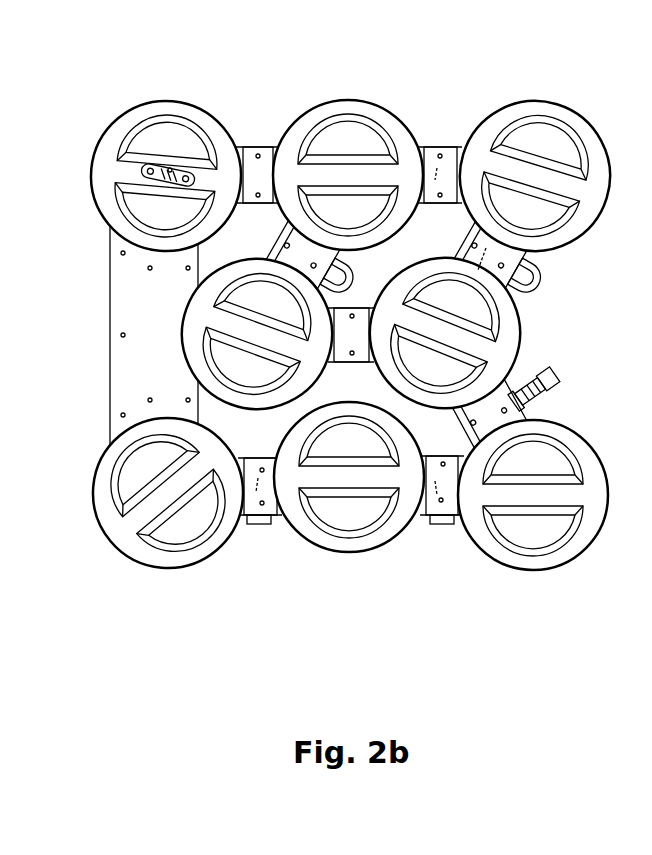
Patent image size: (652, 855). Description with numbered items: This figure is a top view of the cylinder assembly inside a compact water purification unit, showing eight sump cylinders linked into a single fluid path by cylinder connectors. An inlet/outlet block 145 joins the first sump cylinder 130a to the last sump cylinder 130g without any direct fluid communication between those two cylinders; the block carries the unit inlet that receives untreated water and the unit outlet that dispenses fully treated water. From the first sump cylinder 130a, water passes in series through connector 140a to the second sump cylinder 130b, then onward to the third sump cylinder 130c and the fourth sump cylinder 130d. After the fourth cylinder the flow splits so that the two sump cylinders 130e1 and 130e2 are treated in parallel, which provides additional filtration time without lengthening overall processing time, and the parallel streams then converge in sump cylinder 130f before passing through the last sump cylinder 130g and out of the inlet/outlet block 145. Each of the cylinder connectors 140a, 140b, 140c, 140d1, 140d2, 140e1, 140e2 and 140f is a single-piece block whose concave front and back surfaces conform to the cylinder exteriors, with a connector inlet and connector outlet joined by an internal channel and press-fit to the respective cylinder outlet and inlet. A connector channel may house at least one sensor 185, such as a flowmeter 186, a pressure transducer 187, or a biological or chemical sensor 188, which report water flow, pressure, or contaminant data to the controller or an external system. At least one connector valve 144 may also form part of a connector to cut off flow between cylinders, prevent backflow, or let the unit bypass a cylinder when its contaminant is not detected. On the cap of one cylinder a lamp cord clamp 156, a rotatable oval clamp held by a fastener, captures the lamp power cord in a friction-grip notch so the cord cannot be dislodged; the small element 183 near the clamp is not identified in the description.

The first sump cylinder 130a is at (138, 568).
The second sump cylinder 130b is at (348, 553).
The third sump cylinder 130c is at (530, 572).
The fourth sump cylinder 130d is at (521, 348).
The sump cylinder (parallel) 130e1 is at (560, 100).
The sump cylinder (parallel) 130e2 is at (183, 353).
The sump cylinder 130f is at (346, 99).
The last sump cylinder 130g is at (167, 99).
The cylinder connector 140a is at (253, 522).
The cylinder connector 140b is at (445, 522).
The cylinder connector 140c is at (520, 412).
The cylinder connector 140d1 is at (522, 258).
The cylinder connector 140d2 is at (352, 363).
The cylinder connector 140e1 is at (455, 138).
The cylinder connector 140e2 is at (293, 238).
The cylinder connector 140f is at (256, 146).
The connector valve 144 is at (482, 252).
The inlet/outlet block 145 is at (120, 308).
The lamp cord clamp 156 is at (150, 172).
The pin 183 is at (170, 168).
The sensor 185 is at (437, 170).
The flowmeter 186 is at (435, 483).
The pressure transducer 187 is at (560, 375).
The biological or chemical sensor 188 is at (258, 480).